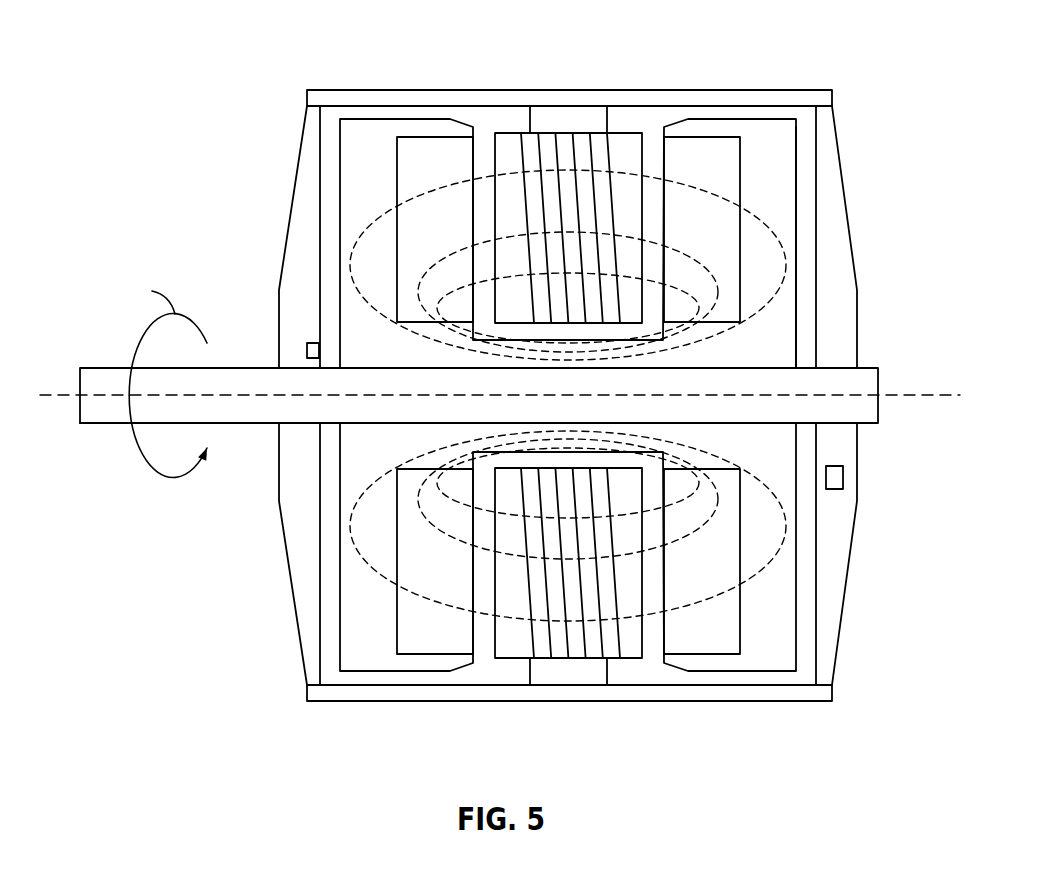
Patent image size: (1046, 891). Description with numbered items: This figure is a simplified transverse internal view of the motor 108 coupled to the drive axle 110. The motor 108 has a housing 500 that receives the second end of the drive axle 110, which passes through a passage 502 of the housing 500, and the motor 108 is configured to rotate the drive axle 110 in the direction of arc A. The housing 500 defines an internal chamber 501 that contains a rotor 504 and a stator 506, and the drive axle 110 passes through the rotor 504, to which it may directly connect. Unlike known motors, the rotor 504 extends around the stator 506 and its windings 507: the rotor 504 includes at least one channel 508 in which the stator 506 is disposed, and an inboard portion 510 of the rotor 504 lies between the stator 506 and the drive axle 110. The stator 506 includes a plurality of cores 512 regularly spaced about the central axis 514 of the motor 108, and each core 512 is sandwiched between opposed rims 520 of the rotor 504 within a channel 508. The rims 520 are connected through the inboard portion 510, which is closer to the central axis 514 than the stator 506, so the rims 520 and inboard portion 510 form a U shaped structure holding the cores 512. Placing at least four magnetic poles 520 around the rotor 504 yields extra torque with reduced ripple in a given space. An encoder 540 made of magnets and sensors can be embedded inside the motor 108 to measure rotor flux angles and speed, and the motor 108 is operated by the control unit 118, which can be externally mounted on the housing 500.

The motor 108 is at (283, 67).
The drive axle 110 is at (250, 378).
The control unit 118 is at (843, 477).
The housing 500 is at (692, 90).
The internal chamber 501 is at (800, 267).
The passage 502 is at (275, 425).
The rotor 504 is at (797, 173).
The stator 506 is at (507, 142).
The windings 507 is at (608, 157).
The channel 508 is at (487, 148).
The inboard portion 510 is at (650, 342).
The core 512 is at (575, 157).
The central axis 514 is at (367, 133).
The rim 520 is at (387, 188).
The encoder 540 is at (315, 343).